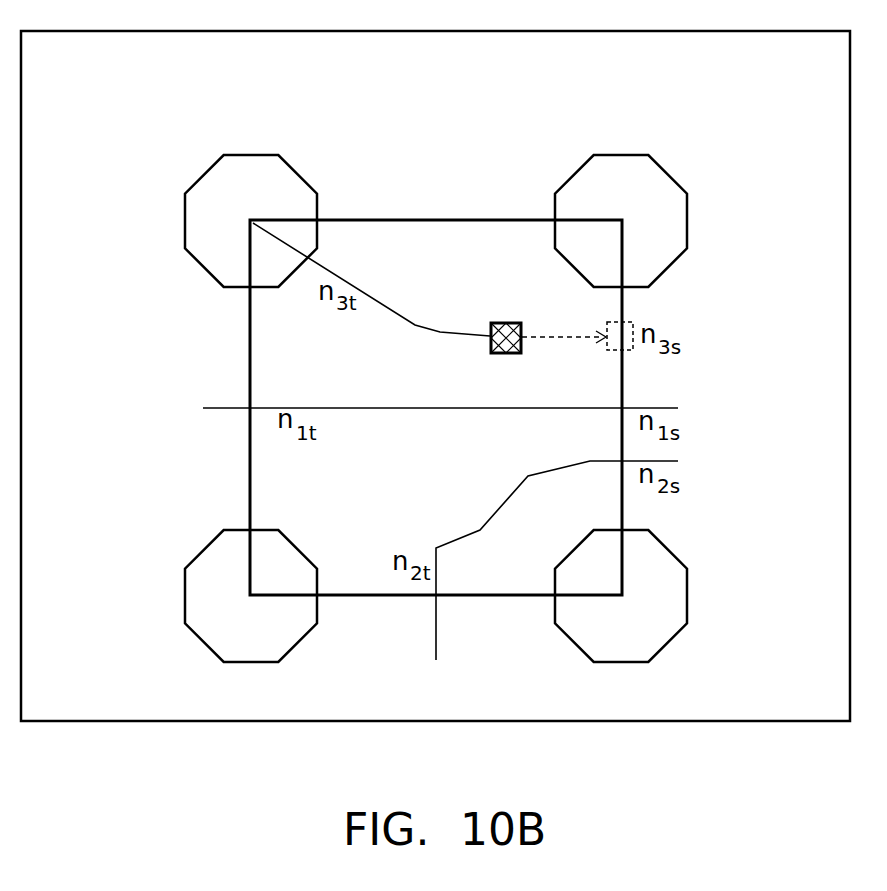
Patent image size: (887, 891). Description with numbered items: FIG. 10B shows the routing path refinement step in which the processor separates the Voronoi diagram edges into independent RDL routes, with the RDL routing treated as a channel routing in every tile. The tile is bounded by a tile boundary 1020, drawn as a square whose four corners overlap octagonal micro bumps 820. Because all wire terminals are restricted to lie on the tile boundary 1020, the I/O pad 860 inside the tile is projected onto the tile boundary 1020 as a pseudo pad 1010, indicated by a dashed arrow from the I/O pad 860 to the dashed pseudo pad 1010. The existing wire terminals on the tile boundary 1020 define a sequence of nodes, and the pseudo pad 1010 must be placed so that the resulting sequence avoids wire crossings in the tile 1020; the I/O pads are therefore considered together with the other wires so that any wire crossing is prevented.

The micro bump 820 is at (690, 597).
The tile boundary 1020 is at (435, 218).
The I/O pad 860 is at (503, 321).
The pseudo pad 1010 is at (633, 325).